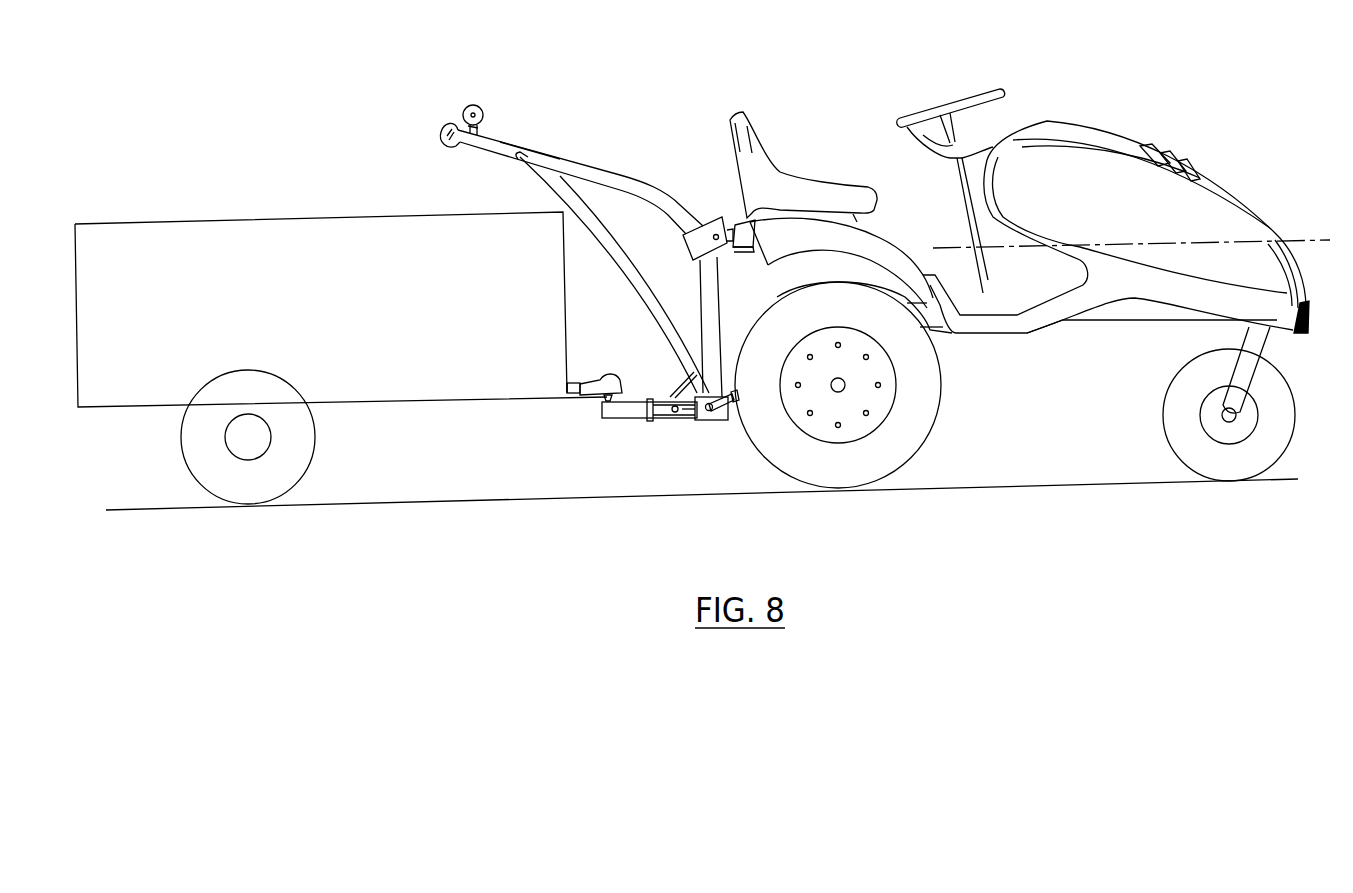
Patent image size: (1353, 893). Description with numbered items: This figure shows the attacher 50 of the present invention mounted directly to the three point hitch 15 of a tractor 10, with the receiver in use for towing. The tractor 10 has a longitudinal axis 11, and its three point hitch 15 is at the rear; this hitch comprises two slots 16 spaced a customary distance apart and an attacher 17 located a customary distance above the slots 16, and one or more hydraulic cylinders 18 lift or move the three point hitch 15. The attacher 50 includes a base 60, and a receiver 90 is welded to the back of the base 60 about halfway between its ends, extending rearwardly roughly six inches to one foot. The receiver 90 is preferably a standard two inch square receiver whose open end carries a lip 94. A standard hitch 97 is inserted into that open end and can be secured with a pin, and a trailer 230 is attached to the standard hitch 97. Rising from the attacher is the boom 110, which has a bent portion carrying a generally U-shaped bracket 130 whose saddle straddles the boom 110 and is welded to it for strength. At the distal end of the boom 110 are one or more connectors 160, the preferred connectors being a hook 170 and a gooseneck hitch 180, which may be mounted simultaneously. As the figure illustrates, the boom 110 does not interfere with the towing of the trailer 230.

The tractor 10 is at (1113, 112).
The longitudinal axis 11 is at (1304, 240).
The three point hitch 15 is at (731, 226).
The slots 16 is at (712, 411).
The attacher 17 is at (712, 217).
The hydraulic cylinders 18 is at (747, 250).
The attacher 50 is at (533, 122).
The base 60 is at (702, 414).
The receiver 90 is at (662, 392).
The lip 94 is at (648, 397).
The standard hitch 97 is at (615, 420).
The boom 110 is at (590, 165).
The U-shaped bracket 130 is at (702, 214).
The connectors 160 is at (465, 107).
The hook 170 is at (442, 132).
The gooseneck hitch 180 is at (463, 113).
The trailer 230 is at (237, 198).